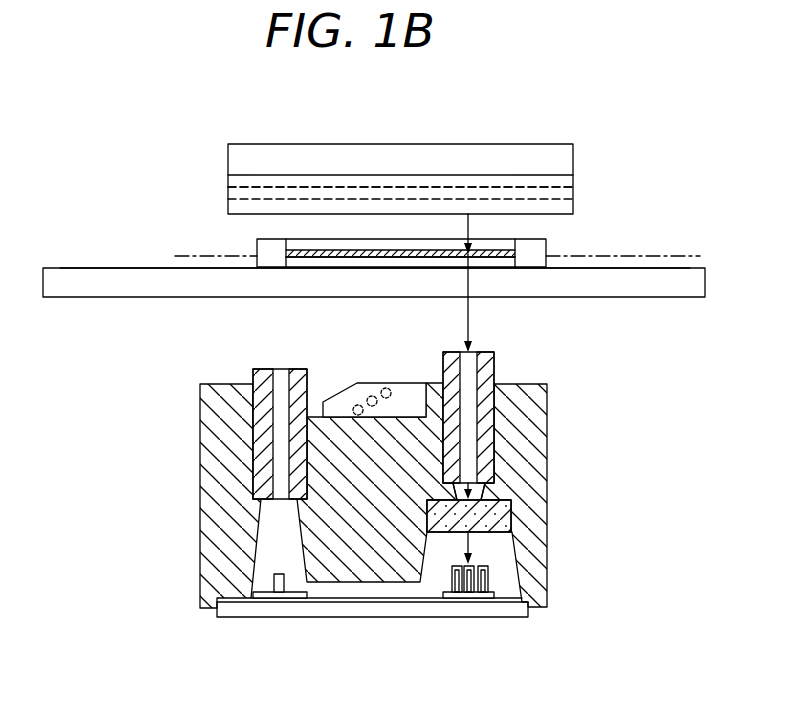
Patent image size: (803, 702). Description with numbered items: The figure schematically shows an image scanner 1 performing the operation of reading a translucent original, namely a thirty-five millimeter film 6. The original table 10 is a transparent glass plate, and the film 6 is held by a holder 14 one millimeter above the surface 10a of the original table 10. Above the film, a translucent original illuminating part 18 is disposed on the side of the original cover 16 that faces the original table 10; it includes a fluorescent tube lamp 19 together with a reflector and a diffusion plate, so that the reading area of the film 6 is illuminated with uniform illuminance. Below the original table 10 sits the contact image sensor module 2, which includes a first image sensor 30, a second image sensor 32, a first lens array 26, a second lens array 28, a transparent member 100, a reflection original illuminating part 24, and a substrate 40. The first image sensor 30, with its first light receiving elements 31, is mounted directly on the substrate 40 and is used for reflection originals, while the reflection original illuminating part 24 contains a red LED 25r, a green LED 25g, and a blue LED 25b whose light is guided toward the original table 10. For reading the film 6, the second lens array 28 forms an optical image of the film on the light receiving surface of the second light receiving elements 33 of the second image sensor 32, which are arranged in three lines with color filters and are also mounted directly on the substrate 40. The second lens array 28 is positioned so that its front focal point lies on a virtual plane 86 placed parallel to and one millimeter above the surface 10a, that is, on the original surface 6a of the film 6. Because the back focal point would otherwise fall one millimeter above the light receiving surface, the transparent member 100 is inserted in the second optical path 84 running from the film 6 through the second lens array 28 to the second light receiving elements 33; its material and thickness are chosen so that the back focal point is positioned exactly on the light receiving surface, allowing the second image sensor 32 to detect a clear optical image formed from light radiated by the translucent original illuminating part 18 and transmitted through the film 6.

The detection system 1 is at (673, 134).
The contact image sensor module 2 is at (593, 396).
The 35 mm film 6 is at (495, 250).
The original surface 6a is at (510, 268).
The original table 10 is at (76, 285).
The surface 10a is at (142, 262).
The holder 14 is at (262, 248).
The original cover 16 is at (470, 150).
The translucent original illuminating part 18 is at (513, 182).
The fluorescent tube lamp 19 is at (578, 180).
The reflection original illuminating part 24 is at (418, 393).
The red LED 25r is at (358, 376).
The green LED 25g is at (383, 381).
The blue LED 25b is at (398, 378).
The first lens array 26 is at (258, 372).
The second lens array 28 is at (490, 372).
The first image sensor 30 is at (278, 593).
The first light receiving elements 31 is at (285, 588).
The second image sensor 32 is at (445, 598).
The second light receiving elements 33 is at (469, 592).
The substrate 40 is at (377, 613).
The second optical path 84 is at (468, 228).
The virtual plane 86 is at (662, 251).
The transparent member 100 is at (505, 515).